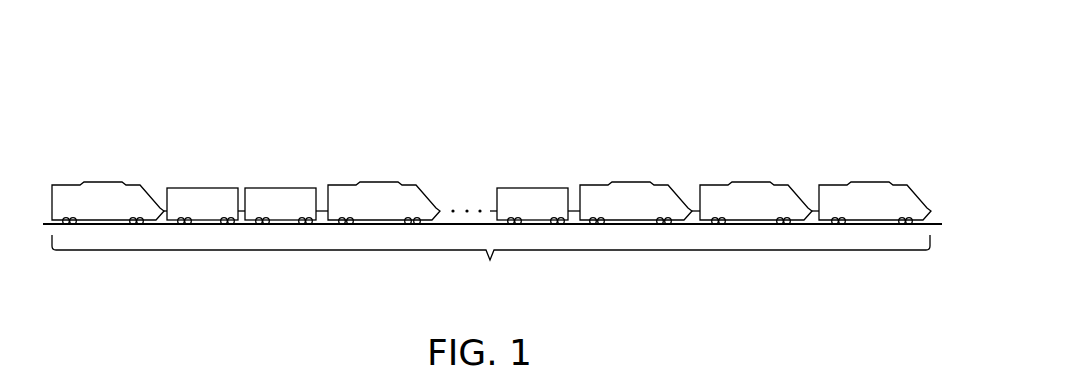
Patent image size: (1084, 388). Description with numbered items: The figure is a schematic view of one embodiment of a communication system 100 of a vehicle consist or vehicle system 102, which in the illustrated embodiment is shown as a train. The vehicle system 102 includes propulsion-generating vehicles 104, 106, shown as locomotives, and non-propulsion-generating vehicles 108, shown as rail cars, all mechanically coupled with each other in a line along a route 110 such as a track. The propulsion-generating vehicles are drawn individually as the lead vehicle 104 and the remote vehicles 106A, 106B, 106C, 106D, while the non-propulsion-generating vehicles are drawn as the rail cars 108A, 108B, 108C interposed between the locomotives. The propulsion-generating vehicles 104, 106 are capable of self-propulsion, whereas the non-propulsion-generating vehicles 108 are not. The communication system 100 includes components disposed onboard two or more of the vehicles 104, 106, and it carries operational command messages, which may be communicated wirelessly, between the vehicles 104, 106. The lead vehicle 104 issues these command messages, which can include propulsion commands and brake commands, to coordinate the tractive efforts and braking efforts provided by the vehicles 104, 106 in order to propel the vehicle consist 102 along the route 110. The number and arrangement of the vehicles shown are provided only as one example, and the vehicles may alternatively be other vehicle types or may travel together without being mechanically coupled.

The communication system 100 is at (836, 46).
The vehicle consist 102 is at (491, 262).
The lead vehicle 104 is at (865, 182).
The propulsion-generating vehicles 106 is at (756, 160).
The propulsion-generating vehicle 106A is at (738, 182).
The propulsion-generating vehicle 106B is at (627, 182).
The propulsion-generating vehicle 106C is at (377, 182).
The propulsion-generating vehicle 106D is at (100, 182).
The non-propulsion-generating vehicles 108 is at (539, 160).
The non-propulsion-generating vehicle 108A is at (515, 188).
The non-propulsion-generating vehicle 108B is at (277, 188).
The non-propulsion-generating vehicle 108C is at (200, 188).
The route 110 is at (935, 220).